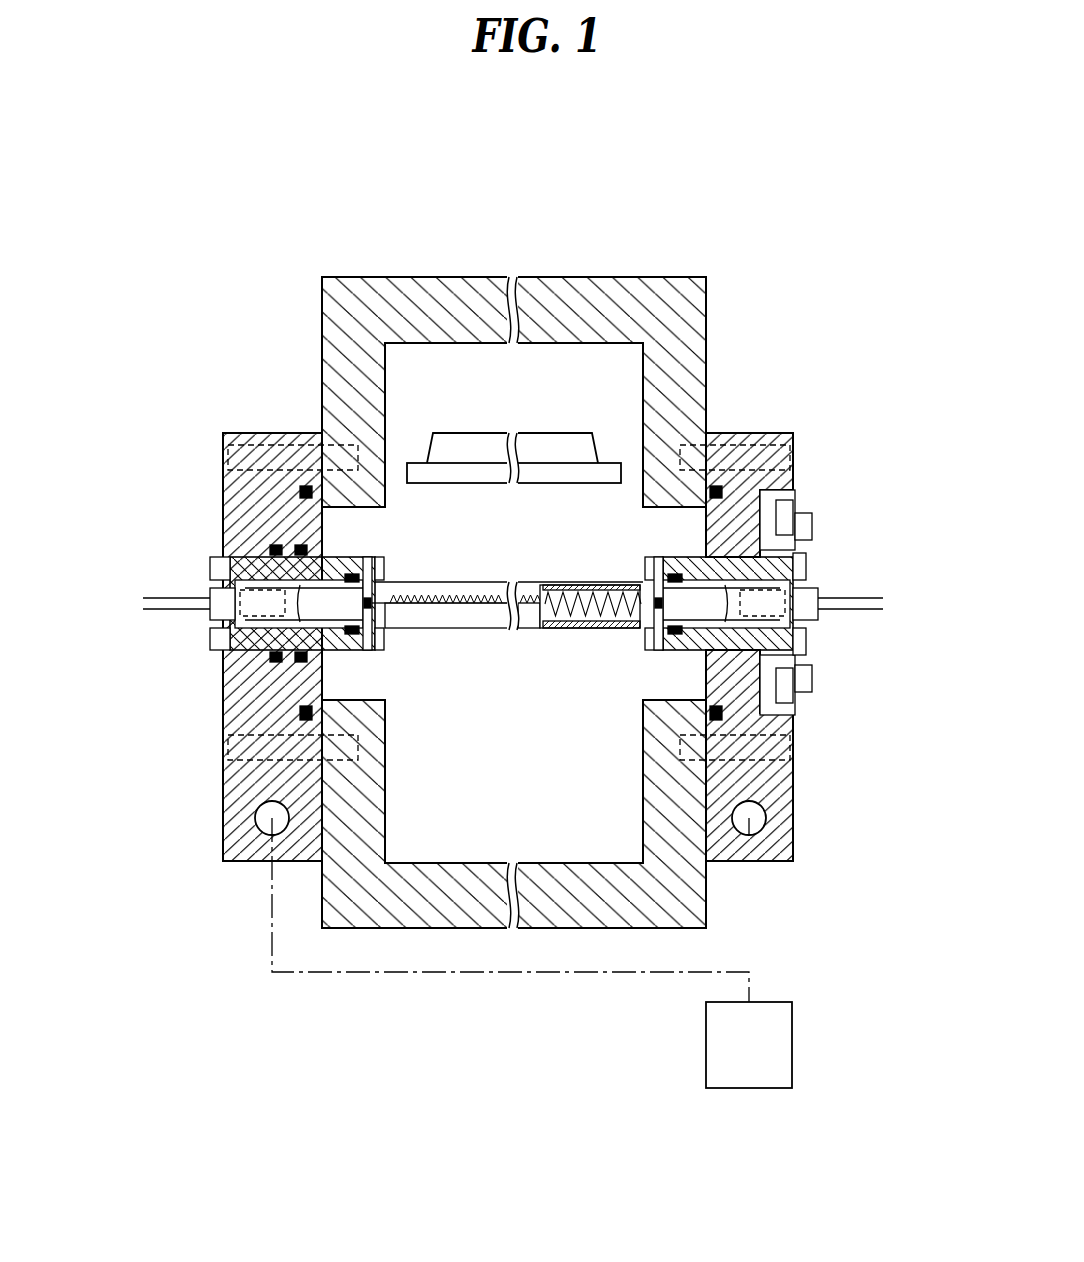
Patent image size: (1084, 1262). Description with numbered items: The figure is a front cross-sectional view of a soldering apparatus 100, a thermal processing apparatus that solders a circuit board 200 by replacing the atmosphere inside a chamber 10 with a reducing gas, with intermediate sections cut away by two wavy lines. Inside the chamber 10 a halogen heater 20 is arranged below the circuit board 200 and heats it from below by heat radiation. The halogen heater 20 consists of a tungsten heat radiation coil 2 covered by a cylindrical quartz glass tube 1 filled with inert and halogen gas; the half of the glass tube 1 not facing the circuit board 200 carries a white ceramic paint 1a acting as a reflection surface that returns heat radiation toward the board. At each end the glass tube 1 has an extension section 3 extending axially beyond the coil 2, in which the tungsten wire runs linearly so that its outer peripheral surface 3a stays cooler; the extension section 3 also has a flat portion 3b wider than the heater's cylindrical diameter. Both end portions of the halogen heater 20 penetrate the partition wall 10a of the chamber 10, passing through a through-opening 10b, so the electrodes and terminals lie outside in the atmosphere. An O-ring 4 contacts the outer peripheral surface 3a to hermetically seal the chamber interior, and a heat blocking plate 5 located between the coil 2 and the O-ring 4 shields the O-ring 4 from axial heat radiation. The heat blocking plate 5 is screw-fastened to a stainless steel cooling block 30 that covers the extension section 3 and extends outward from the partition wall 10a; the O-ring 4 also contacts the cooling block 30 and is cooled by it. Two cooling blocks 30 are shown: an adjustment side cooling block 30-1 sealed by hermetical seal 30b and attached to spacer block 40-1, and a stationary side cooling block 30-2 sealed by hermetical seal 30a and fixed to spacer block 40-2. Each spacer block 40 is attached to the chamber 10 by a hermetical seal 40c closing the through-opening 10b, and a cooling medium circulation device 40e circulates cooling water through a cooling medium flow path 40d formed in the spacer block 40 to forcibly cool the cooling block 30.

The glass tube 1 is at (395, 580).
The white ceramic paint 1a is at (495, 625).
The heat radiation coil 2 is at (590, 598).
The extension section 3 is at (499, 523).
The outer peripheral surface 3a is at (265, 455).
The flat portion 3b is at (285, 490).
The O-ring 4 is at (245, 745).
The heat blocking plate 5 is at (260, 755).
The chamber 10 is at (673, 407).
The partition wall 10a is at (600, 325).
The through-opening 10b is at (310, 470).
The halogen heater 20 is at (185, 585).
The cooling block 30 is at (501, 594).
The adjustment side cooling block 30-1 is at (770, 635).
The stationary side cooling block 30-2 is at (295, 595).
The hermetical seal 30a is at (300, 650).
The hermetical seal 30b is at (790, 672).
The spacer block 40 is at (473, 597).
The spacer block 40-1 is at (765, 445).
The spacer block 40-2 is at (250, 520).
The hermetical seal 40c is at (256, 806).
The cooling medium flow path 40d is at (345, 808).
The cooling medium circulation device 40e is at (762, 1062).
The soldering apparatus 100 is at (290, 195).
The circuit board 200 is at (470, 465).